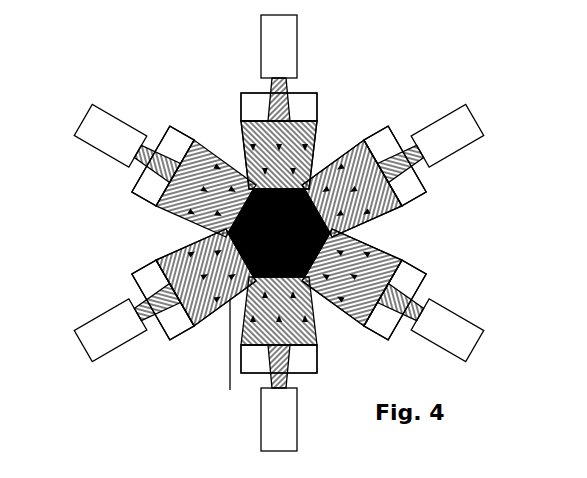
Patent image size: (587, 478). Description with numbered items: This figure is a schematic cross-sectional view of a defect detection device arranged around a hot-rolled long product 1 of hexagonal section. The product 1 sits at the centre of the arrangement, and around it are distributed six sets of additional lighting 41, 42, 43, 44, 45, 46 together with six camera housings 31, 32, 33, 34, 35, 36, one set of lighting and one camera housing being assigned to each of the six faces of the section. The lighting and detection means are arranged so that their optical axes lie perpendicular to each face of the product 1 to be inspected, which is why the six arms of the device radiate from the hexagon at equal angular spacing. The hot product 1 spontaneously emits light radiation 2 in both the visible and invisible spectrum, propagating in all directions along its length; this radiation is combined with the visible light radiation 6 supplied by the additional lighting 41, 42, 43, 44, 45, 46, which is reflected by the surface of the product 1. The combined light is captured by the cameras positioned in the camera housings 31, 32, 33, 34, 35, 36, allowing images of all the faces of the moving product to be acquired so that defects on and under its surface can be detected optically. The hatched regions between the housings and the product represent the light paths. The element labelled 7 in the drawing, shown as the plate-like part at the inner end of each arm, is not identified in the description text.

The product 1 is at (335, 232).
The light radiation 2 is at (313, 163).
The light radiation 6 is at (247, 143).
The coupling plate 7 is at (297, 97).
The camera housing 31 is at (288, 53).
The camera housing 32 is at (455, 143).
The camera housing 33 is at (400, 276).
The camera housing 34 is at (278, 432).
The camera housing 35 is at (87, 343).
The camera housing 36 is at (122, 153).
The additional lighting set 41 is at (258, 110).
The additional lighting set 42 is at (390, 148).
The additional lighting set 43 is at (453, 335).
The additional lighting set 44 is at (243, 355).
The additional lighting set 45 is at (175, 322).
The additional lighting set 46 is at (142, 190).